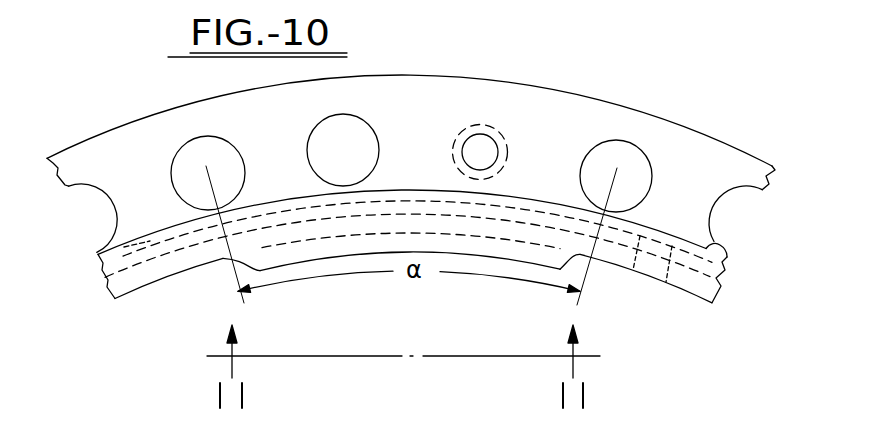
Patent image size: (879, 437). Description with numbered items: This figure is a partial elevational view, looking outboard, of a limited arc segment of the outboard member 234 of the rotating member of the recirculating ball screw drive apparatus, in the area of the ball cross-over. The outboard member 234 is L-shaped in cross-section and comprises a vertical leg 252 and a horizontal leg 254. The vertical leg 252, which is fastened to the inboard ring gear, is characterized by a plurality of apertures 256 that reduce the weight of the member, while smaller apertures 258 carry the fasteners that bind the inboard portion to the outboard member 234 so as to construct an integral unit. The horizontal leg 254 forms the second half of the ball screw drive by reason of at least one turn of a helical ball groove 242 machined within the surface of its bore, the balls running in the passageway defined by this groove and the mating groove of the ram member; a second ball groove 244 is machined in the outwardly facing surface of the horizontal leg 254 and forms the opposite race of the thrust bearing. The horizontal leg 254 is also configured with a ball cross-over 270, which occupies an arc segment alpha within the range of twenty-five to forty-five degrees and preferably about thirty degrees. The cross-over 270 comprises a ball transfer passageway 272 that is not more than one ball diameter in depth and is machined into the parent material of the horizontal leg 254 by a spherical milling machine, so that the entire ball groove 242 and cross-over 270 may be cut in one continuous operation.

The outboard member 234 is at (138, 120).
The vertical leg 252 is at (705, 135).
The horizontal leg 254 is at (727, 250).
The apertures 256 is at (616, 140).
The apertures 258 is at (481, 134).
The ball cross-over 270 is at (502, 258).
The ball transfer passageway 272 is at (390, 222).
The helical ball groove 242 is at (193, 257).
The second ball groove 244 is at (103, 290).